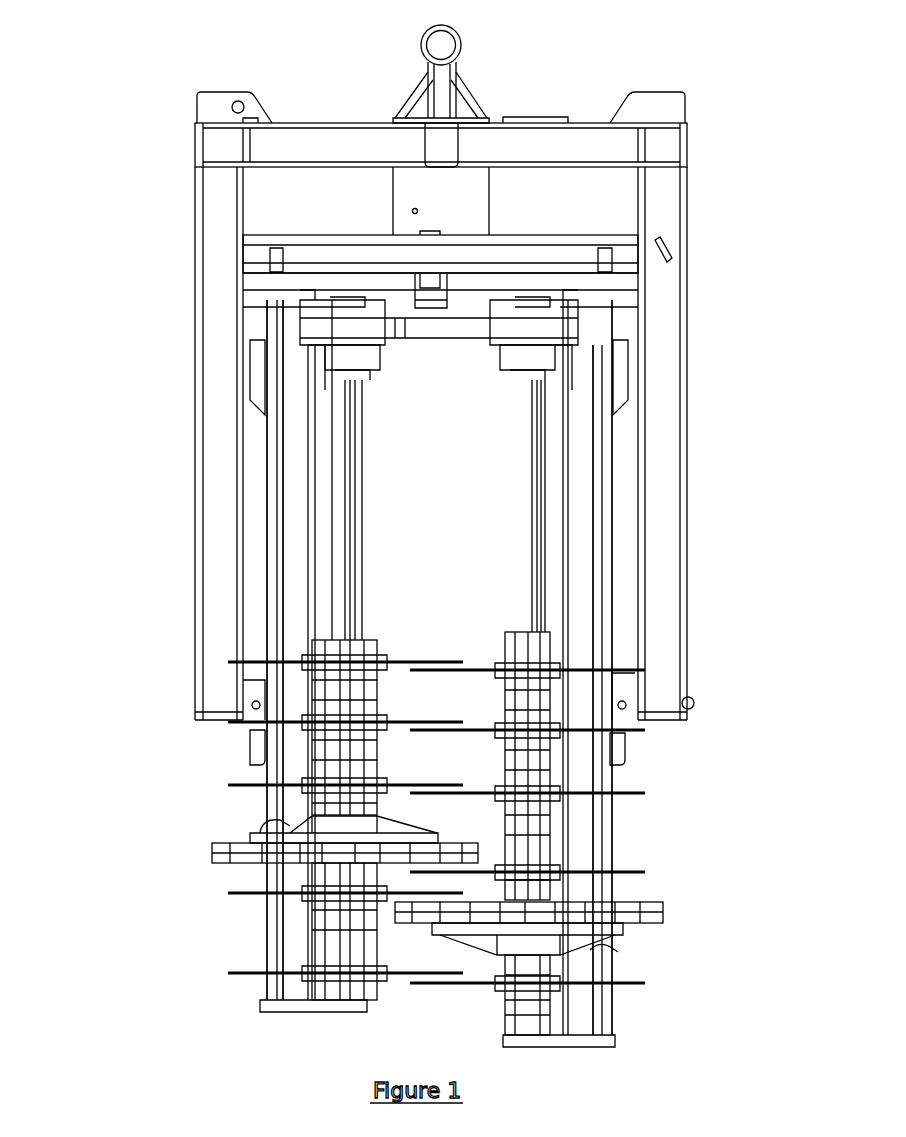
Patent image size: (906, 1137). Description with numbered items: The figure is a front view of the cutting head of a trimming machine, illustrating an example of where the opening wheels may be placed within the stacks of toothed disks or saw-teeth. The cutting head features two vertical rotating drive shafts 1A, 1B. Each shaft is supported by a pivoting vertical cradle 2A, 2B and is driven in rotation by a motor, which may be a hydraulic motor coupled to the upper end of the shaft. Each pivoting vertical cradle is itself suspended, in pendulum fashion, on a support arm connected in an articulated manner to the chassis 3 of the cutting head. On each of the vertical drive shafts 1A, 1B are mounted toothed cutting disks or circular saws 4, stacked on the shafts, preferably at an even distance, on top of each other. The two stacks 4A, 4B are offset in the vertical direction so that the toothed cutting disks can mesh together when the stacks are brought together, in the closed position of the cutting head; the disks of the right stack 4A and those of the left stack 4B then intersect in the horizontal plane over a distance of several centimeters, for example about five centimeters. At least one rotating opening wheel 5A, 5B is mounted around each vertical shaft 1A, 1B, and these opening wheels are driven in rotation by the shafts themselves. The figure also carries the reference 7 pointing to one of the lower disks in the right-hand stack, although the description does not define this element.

The vertical rotating drive shaft 1A is at (338, 539).
The vertical rotating drive shaft 1B is at (527, 562).
The pivoting vertical cradle 2A is at (295, 457).
The pivoting vertical cradle 2B is at (579, 462).
The chassis 3 is at (339, 256).
The toothed cutting disks 4 is at (228, 662).
The right stack 4A is at (213, 780).
The left stack 4B is at (668, 773).
The rotating opening wheel 5A is at (207, 852).
The rotating opening wheel 5B is at (665, 917).
The lower blade 7 is at (640, 872).